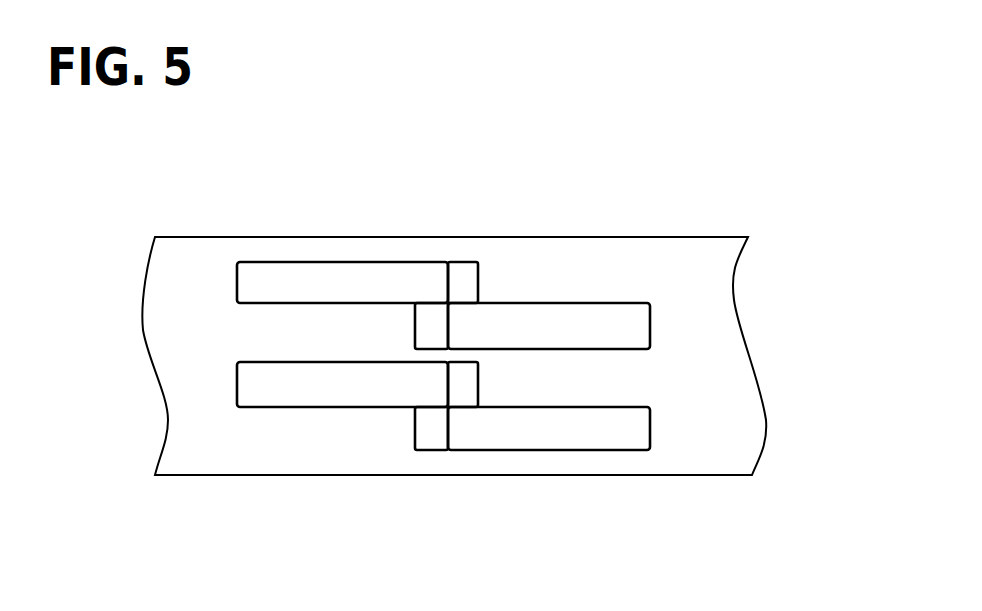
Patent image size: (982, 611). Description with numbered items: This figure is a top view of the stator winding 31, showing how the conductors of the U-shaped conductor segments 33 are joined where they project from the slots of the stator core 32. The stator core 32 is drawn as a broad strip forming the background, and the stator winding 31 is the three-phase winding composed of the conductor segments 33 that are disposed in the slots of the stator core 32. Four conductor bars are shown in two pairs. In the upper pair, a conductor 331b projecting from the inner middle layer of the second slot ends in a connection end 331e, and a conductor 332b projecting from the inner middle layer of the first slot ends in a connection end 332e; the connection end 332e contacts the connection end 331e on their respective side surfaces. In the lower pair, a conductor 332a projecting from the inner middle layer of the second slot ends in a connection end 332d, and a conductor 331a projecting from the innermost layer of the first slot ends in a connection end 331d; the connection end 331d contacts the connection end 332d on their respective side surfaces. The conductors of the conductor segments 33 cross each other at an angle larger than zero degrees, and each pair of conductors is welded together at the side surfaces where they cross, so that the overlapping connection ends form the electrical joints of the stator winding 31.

The stator winding 31 is at (498, 291).
The stator core 32 is at (713, 275).
The conductor segments 33 is at (450, 372).
The conductor 331a is at (537, 430).
The conductor 331b is at (342, 275).
The connection end 331d is at (432, 432).
The connection end 331e is at (462, 280).
The conductor 332a is at (325, 387).
The conductor 332b is at (578, 320).
The connection end 332d is at (465, 383).
The connection end 332e is at (428, 326).